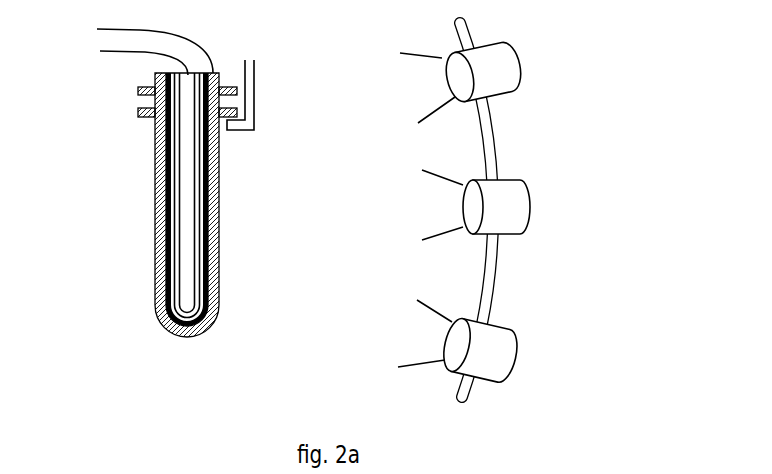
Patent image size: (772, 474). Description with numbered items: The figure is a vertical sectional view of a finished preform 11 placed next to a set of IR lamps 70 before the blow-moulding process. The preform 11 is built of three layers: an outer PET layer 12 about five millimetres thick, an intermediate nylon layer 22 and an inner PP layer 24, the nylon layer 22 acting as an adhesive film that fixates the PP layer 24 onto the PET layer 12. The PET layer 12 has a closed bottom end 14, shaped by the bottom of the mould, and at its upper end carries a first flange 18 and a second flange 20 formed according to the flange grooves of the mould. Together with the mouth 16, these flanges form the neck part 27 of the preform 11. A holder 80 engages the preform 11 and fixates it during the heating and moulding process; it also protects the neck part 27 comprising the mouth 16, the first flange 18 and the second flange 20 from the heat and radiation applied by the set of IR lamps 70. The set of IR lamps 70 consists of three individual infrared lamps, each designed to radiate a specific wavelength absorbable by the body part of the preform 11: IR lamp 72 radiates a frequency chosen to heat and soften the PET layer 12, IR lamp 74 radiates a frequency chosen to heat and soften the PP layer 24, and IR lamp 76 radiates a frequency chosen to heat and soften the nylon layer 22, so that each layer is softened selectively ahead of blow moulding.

The preform 11 is at (143, 158).
The PET layer 12 is at (160, 252).
The bottom end 14 is at (166, 330).
The mouth 16 is at (100, 51).
The first flange 18 is at (138, 89).
The second flange 20 is at (138, 110).
The nylon layer 22 is at (170, 220).
The PP layer 24 is at (177, 195).
The neck part 27 is at (97, 29).
The set of IR lamps 70 is at (635, 82).
The IR lamp 72 is at (500, 63).
The IR lamp 74 is at (513, 203).
The IR lamp 76 is at (497, 360).
The holder 80 is at (258, 98).